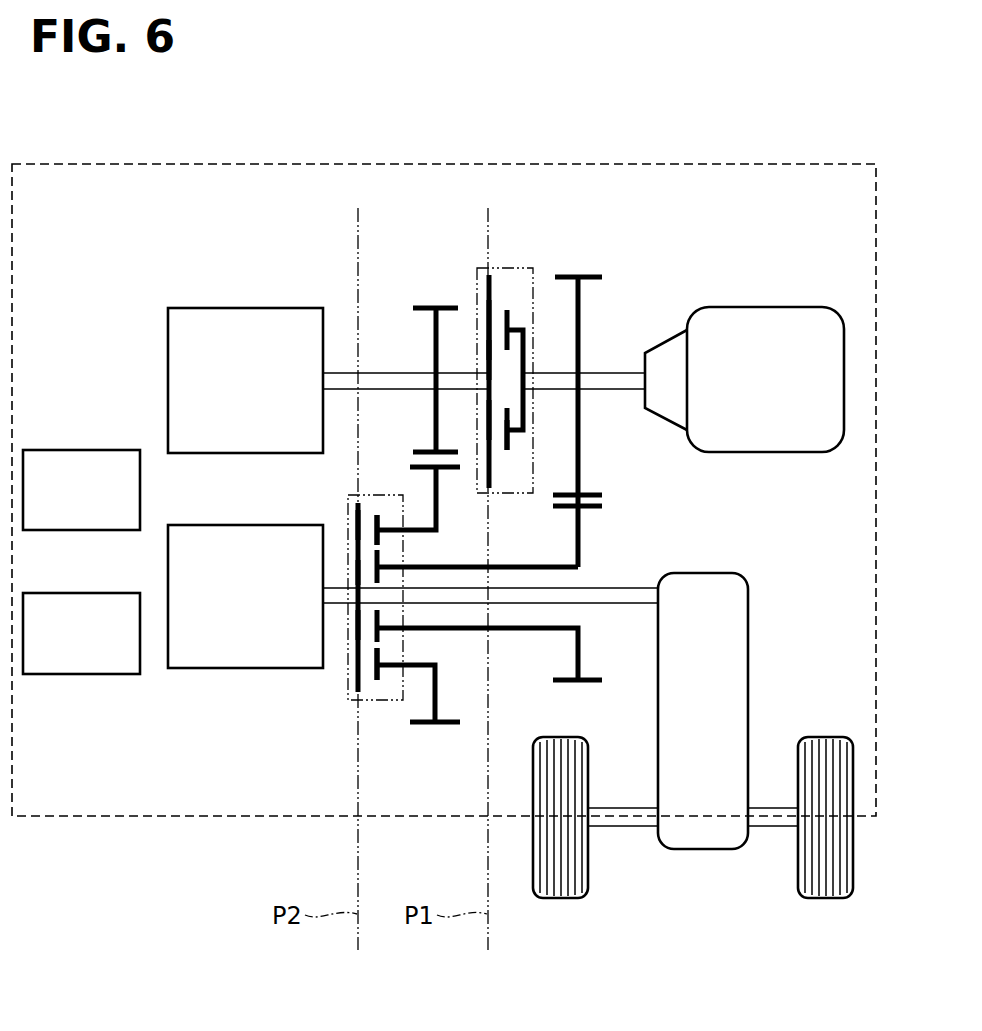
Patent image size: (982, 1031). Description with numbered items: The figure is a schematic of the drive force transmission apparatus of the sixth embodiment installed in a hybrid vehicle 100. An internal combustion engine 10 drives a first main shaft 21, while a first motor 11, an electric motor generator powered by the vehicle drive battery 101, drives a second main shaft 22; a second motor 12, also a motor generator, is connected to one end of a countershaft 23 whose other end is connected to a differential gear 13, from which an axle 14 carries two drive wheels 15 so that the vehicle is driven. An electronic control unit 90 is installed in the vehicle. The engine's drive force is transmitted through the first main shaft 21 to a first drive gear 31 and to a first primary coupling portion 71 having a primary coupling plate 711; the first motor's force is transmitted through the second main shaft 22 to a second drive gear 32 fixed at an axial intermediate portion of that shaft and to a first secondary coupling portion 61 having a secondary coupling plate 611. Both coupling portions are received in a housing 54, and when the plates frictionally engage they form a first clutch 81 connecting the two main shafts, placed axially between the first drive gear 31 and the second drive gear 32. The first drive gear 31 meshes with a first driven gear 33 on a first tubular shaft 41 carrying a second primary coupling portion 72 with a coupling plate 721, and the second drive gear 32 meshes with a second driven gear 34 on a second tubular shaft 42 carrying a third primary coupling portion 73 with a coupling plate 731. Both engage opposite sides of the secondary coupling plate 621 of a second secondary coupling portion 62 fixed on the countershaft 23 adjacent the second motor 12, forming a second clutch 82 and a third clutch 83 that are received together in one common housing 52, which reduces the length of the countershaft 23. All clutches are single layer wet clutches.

The vehicle 100 is at (413, 162).
The internal combustion engine 10 is at (766, 318).
The first motor 11 is at (168, 347).
The second motor 12 is at (168, 563).
The differential gear 13 is at (745, 622).
The axle 14 is at (637, 820).
The drive wheels 15 is at (556, 898).
The first main shaft 21 is at (607, 372).
The second main shaft 22 is at (341, 373).
The countershaft 23 is at (615, 590).
The first drive gear 31 is at (578, 277).
The second drive gear 32 is at (437, 308).
The first driven gear 33 is at (580, 683).
The second driven gear 34 is at (432, 725).
The first tubular shaft 41 is at (498, 567).
The second tubular shaft 42 is at (413, 530).
The housing 52 is at (383, 700).
The housing 54 is at (514, 267).
The first secondary coupling portion 61 is at (487, 347).
The secondary coupling plate 611 is at (487, 325).
The second secondary coupling portion 62 is at (357, 682).
The secondary coupling plate 621 is at (358, 572).
The first primary coupling portion 71 is at (504, 408).
The primary coupling plate 711 is at (504, 432).
The second primary coupling portion 72 is at (380, 630).
The coupling plate 721 is at (377, 636).
The third primary coupling portion 73 is at (380, 538).
The coupling plate 731 is at (377, 535).
The first clutch 81 is at (484, 418).
The second clutch 82 is at (354, 625).
The third clutch 83 is at (354, 525).
The electronic control unit 90 is at (73, 674).
The vehicle drive battery 101 is at (75, 450).